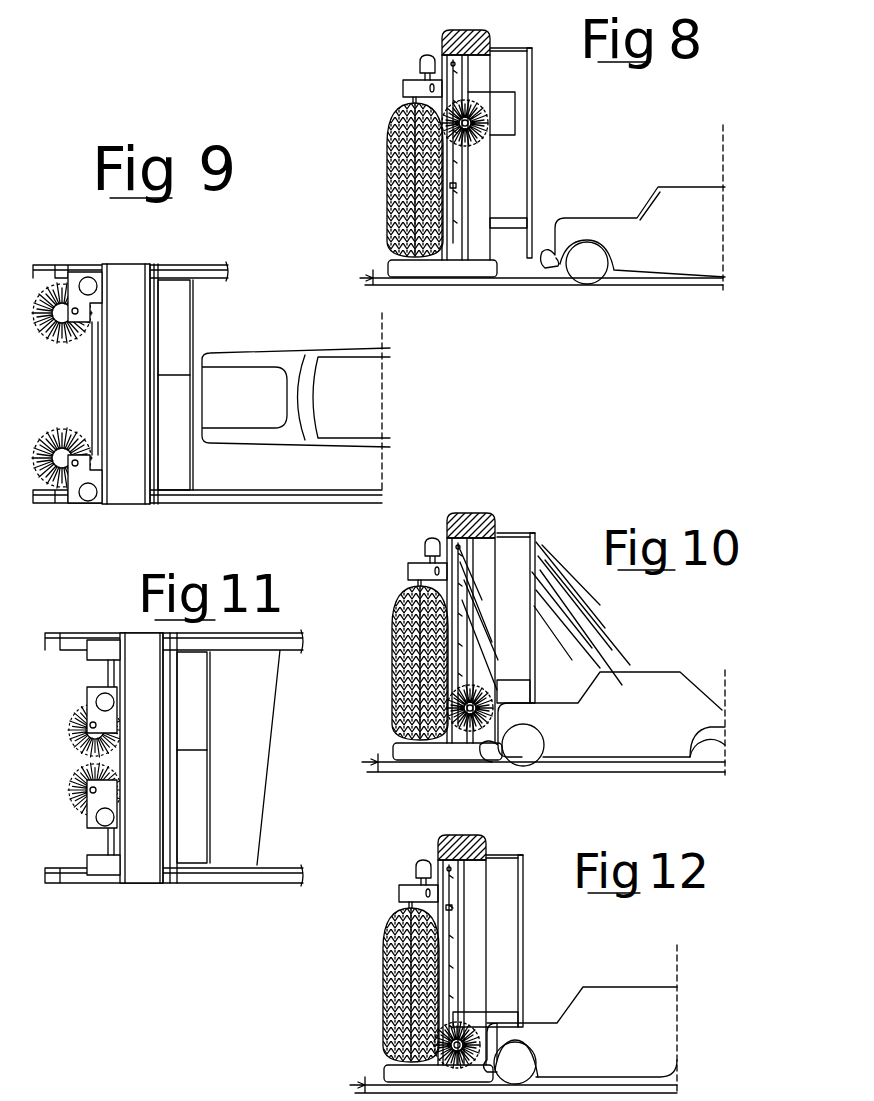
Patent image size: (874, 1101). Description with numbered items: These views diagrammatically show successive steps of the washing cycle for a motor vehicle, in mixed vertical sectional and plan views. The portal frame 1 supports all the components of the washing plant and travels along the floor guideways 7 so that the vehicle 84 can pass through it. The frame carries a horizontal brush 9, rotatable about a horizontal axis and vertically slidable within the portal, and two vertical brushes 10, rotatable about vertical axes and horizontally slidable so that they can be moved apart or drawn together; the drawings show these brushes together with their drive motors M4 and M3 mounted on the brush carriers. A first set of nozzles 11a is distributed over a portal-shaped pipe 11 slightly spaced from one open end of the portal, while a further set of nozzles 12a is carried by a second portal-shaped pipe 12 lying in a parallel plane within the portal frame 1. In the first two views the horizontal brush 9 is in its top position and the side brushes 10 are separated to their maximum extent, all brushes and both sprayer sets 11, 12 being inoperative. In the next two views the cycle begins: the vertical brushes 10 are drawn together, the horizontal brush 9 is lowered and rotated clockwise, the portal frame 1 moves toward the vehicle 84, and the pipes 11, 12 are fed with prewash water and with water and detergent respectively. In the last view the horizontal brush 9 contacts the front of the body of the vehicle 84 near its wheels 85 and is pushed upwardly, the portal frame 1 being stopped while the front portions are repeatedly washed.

In FIG. 8, the portal frame 1 is at (498, 44).
In FIG. 9, the portal frame 1 is at (148, 333).
In FIG. 11, the portal frame 1 is at (165, 729).
In FIG. 10, the portal frame 1 is at (498, 526).
In FIG. 12, the portal frame 1 is at (486, 847).
In FIG. 8, the guideway 7 is at (372, 272).
In FIG. 9, the guideway 7 is at (211, 265).
In FIG. 11, the guideway 7 is at (174, 758).
In FIG. 10, the guideway 7 is at (378, 756).
In FIG. 12, the guideway 7 is at (365, 1080).
In FIG. 8, the horizontal brush 9 is at (480, 110).
In FIG. 10, the horizontal brush 9 is at (496, 688).
In FIG. 12, the horizontal brush 9 is at (478, 1012).
In FIG. 8, the vertical brush 10 is at (400, 125).
In FIG. 9, the vertical brush 10 is at (62, 428).
In FIG. 11, the vertical brush 10 is at (72, 780).
In FIG. 10, the vertical brush 10 is at (406, 616).
In FIG. 12, the vertical brush 10 is at (392, 940).
In FIG. 8, the pipe 11 is at (533, 88).
In FIG. 11, the pipe 11 is at (211, 794).
In FIG. 10, the pipe 11 is at (536, 540).
In FIG. 12, the pipe 11 is at (525, 918).
In FIG. 8, the nozzles 11a is at (533, 138).
In FIG. 10, the nozzles 11a is at (556, 582).
In FIG. 12, the nozzles 11a is at (523, 970).
In FIG. 8, the pipe 12 is at (458, 190).
In FIG. 10, the pipe 12 is at (455, 548).
In FIG. 12, the pipe 12 is at (451, 887).
In FIG. 8, the nozzles 12a is at (456, 185).
In FIG. 10, the nozzles 12a is at (462, 630).
In FIG. 12, the nozzles 12a is at (452, 908).
In FIG. 8, the vehicle 84 is at (666, 212).
In FIG. 9, the vehicle 84 is at (335, 362).
In FIG. 10, the vehicle 84 is at (641, 692).
In FIG. 12, the vehicle 84 is at (619, 1002).
In FIG. 8, the wheels 85 is at (580, 255).
In FIG. 10, the wheels 85 is at (534, 748).
In FIG. 12, the wheels 85 is at (521, 1052).
In FIG. 9, the brush drive motor M3 is at (88, 502).
In FIG. 11, the brush drive motor M3 is at (100, 822).
In FIG. 8, the brush drive motor M4 is at (418, 66).
In FIG. 9, the brush drive motor M4 is at (89, 278).
In FIG. 11, the brush drive motor M4 is at (99, 698).
In FIG. 10, the brush drive motor M4 is at (423, 548).
In FIG. 12, the brush drive motor M4 is at (416, 862).